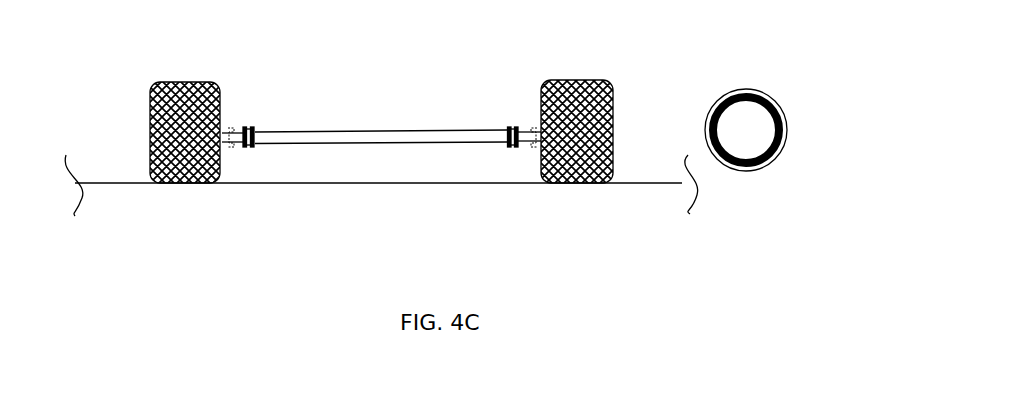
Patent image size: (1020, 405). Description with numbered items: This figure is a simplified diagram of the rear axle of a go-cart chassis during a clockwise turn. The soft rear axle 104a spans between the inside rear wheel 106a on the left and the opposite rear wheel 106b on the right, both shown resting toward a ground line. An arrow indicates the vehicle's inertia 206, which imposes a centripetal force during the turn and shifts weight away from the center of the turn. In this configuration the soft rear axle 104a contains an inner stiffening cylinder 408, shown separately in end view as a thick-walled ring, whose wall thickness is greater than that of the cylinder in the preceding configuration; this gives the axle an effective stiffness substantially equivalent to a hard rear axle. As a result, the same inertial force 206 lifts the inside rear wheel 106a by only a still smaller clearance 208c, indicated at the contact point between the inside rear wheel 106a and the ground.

The soft rear axle 104a is at (322, 124).
The inside rear wheel 106a is at (194, 192).
The wheel 106b is at (568, 192).
The inertia 206 is at (520, 25).
The clearance 208c is at (147, 192).
The inner stiffening cylinder 408 is at (787, 157).